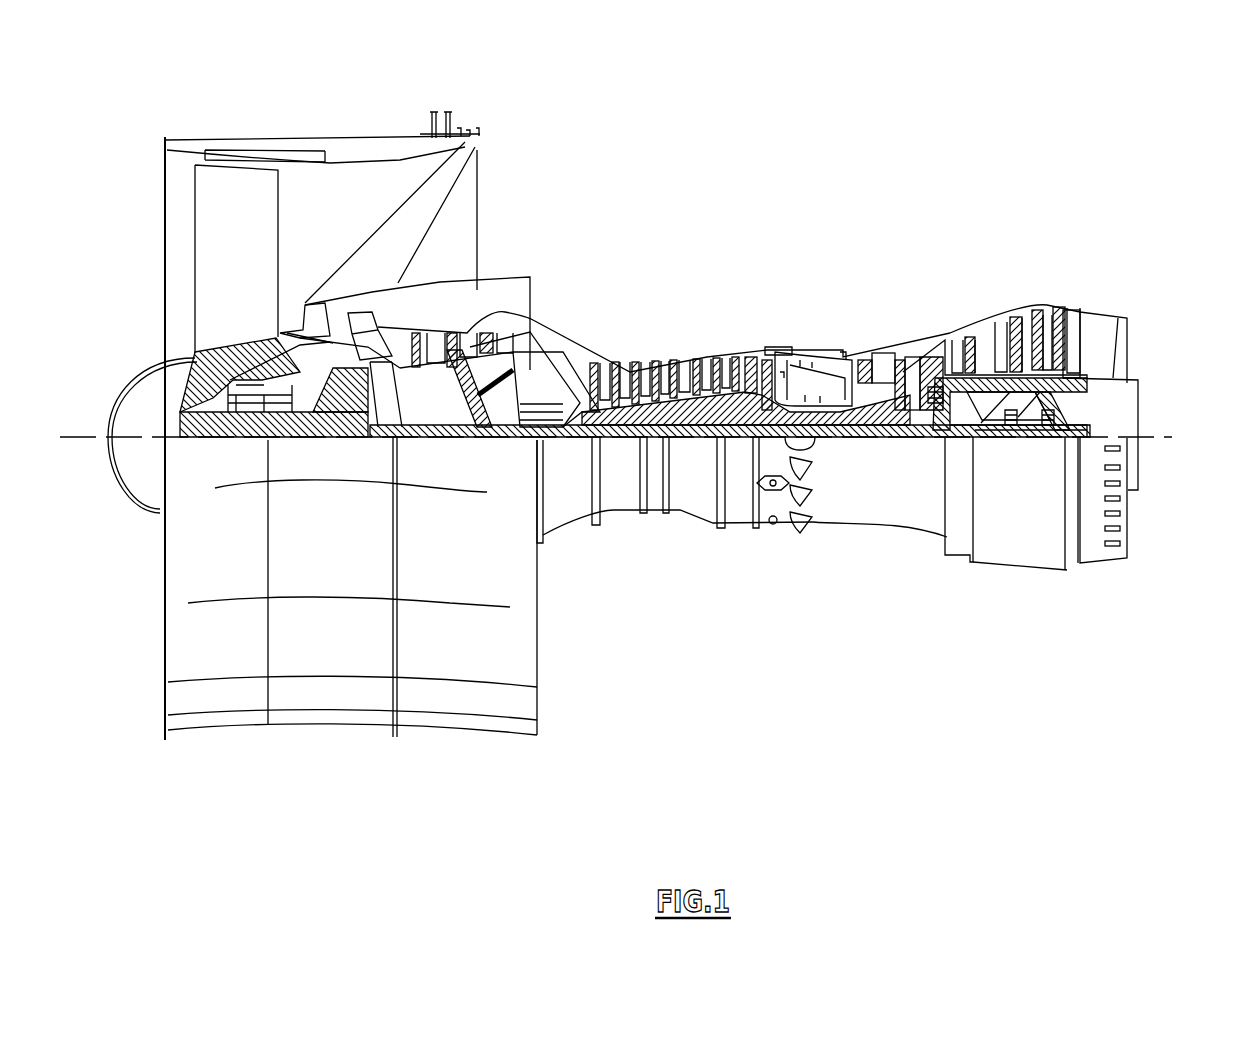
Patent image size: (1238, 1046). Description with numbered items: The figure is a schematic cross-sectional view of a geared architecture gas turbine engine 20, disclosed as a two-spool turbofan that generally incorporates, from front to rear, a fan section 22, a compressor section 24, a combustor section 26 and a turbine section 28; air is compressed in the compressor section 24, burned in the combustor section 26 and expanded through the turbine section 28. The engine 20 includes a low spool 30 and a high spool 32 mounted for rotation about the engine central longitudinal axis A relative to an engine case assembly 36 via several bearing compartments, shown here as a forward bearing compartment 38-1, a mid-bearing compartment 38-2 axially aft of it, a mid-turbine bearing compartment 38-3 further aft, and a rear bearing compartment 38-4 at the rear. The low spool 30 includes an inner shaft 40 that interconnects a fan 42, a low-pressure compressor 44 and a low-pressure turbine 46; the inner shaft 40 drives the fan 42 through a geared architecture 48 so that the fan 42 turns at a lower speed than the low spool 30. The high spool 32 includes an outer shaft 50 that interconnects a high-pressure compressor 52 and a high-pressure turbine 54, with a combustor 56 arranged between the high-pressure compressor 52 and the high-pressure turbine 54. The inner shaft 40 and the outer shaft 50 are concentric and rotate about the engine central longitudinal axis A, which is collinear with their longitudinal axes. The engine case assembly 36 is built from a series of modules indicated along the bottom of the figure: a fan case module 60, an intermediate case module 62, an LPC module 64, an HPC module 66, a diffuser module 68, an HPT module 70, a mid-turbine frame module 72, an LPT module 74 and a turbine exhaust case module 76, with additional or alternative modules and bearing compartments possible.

The gas turbine engine 20 is at (905, 188).
The fan section 22 is at (392, 110).
The compressor section 24 is at (403, 247).
The combustor section 26 is at (863, 247).
The turbine section 28 is at (1073, 247).
The low spool 30 is at (697, 440).
The high spool 32 is at (740, 380).
The engine case assembly 36 is at (737, 528).
The forward bearing compartment 38-1 is at (423, 500).
The mid-bearing compartment 38-2 is at (608, 551).
The mid-turbine bearing compartment 38-3 is at (945, 316).
The rear bearing compartment 38-4 is at (1078, 491).
The inner shaft 40 is at (568, 440).
The fan 42 is at (249, 279).
The low-pressure compressor 44 is at (468, 335).
The low-pressure turbine 46 is at (1013, 322).
The geared architecture 48 is at (358, 418).
The outer shaft 50 is at (823, 440).
The high-pressure compressor 52 is at (670, 410).
The high-pressure turbine 54 is at (883, 350).
The combustor 56 is at (813, 377).
The intermediate case module 62 is at (613, 440).
The engine central longitudinal axis A is at (1160, 437).
The fan case module 60 is at (402, 810).
The LPC module 64 is at (671, 817).
The HPC module 66 is at (750, 810).
The diffuser module 68 is at (822, 810).
The HPT module 70 is at (877, 810).
The mid-turbine frame module 72 is at (937, 810).
The LPT module 74 is at (1062, 810).
The Turbine Exhaust Case module 76 is at (1133, 810).